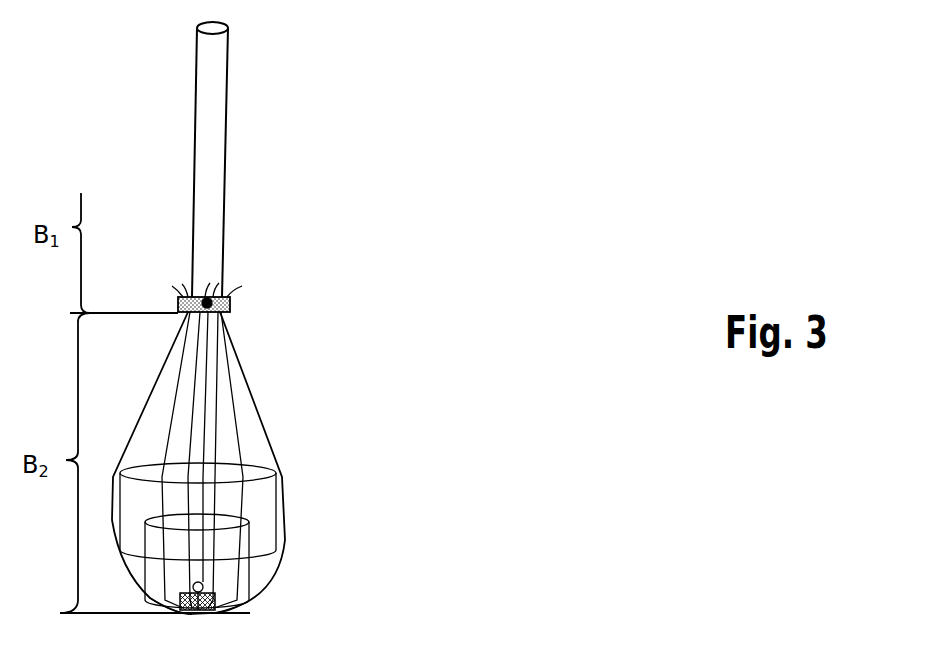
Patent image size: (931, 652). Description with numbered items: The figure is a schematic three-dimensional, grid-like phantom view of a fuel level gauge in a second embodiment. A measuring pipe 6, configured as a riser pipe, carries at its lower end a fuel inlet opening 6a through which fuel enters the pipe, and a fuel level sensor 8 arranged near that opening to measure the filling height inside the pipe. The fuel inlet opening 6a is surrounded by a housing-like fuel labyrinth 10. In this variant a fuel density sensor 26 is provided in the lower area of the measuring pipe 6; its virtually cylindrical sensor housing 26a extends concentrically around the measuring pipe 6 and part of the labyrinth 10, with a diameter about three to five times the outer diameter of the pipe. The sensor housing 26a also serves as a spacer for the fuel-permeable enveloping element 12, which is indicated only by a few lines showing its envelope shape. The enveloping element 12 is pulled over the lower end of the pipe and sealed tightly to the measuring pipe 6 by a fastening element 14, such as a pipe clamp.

The measuring pipe 6 is at (207, 203).
The fastening element 14 is at (230, 303).
The enveloping element 12 is at (255, 417).
The fuel density sensor 26 is at (290, 499).
The sensor housing 26a is at (260, 538).
The fuel labyrinth 10 is at (247, 575).
The fuel inlet opening 6a is at (215, 603).
The fuel level sensor 8 is at (212, 610).